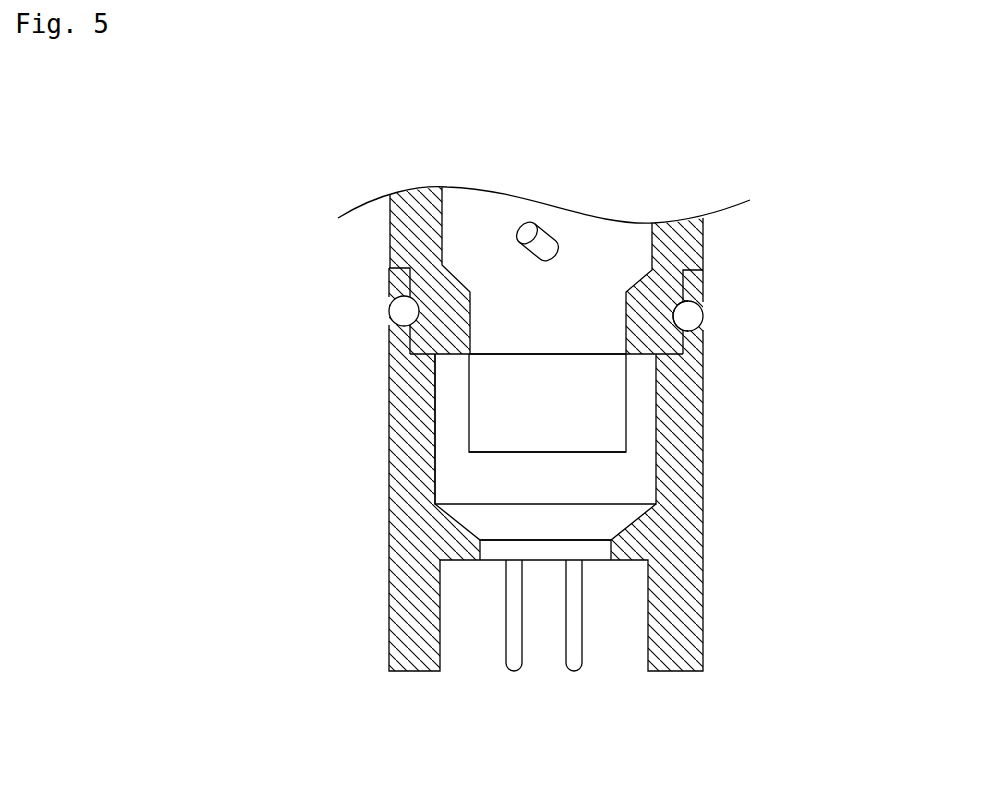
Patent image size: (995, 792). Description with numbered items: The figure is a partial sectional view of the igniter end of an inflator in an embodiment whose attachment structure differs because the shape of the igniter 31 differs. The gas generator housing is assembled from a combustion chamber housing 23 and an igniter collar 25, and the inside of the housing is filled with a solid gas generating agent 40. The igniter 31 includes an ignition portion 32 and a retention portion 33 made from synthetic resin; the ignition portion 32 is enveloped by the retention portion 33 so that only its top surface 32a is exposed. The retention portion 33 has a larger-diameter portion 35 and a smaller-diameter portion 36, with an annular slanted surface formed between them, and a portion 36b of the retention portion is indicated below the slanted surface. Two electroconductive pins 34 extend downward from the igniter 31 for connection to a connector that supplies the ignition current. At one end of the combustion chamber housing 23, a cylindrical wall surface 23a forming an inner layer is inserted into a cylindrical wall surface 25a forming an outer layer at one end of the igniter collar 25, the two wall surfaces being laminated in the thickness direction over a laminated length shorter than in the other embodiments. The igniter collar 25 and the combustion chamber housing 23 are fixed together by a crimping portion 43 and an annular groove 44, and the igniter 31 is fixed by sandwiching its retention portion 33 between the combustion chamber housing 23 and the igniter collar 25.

The combustion chamber housing 23 is at (390, 247).
The cylindrical wall surface 23a is at (397, 302).
The igniter collar 25 is at (408, 645).
The cylindrical wall surface 25a is at (392, 280).
The igniter 31 is at (838, 480).
The ignition portion 32 is at (605, 431).
The top surface 32a is at (535, 354).
The retention portion 33 is at (628, 488).
The electroconductive pins 34 is at (574, 671).
The larger-diameter portion 35 is at (452, 482).
The smaller-diameter portion 36 is at (490, 552).
The base plate portion 36b is at (467, 449).
The solid gas generating agent 40 is at (548, 240).
The crimping portion 43 is at (688, 318).
The annular groove 44 is at (697, 307).